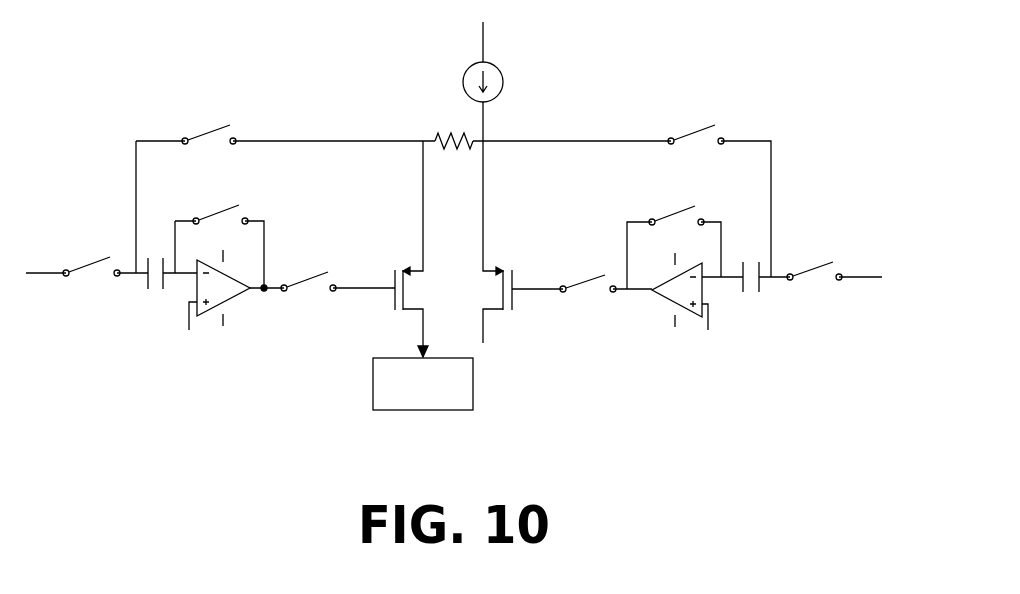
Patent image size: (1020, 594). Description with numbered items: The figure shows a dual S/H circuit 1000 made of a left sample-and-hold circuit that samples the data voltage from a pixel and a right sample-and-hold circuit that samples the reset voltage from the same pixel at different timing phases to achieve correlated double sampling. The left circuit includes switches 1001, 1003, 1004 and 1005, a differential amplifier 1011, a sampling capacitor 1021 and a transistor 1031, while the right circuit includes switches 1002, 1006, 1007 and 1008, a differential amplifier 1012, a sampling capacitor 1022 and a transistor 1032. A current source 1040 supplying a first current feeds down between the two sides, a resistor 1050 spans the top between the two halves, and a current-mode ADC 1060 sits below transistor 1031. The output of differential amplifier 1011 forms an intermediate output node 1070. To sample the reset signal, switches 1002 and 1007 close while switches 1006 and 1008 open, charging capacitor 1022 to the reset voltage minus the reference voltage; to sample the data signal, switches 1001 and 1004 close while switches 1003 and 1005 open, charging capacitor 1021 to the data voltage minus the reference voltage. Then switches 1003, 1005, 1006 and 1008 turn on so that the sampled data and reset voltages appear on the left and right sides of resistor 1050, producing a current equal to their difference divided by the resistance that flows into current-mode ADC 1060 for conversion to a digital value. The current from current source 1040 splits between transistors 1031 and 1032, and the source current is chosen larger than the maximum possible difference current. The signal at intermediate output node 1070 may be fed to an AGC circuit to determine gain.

The dual S/H circuit 1000 is at (461, 265).
The switch 1001 is at (103, 262).
The switch 1002 is at (805, 262).
The switch 1003 is at (228, 126).
The switch 1004 is at (239, 206).
The switch 1005 is at (320, 270).
The switch 1006 is at (680, 126).
The switch 1007 is at (662, 208).
The switch 1008 is at (590, 272).
The differential amplifier 1011 is at (230, 302).
The differential amplifier 1012 is at (668, 302).
The sampling capacitor 1021 is at (153, 292).
The sampling capacitor 1022 is at (747, 294).
The transistor 1031 is at (392, 302).
The transistor 1032 is at (516, 300).
The current source 1040 is at (497, 62).
The resistor 1050 is at (436, 135).
The current-mode ADC 1060 is at (373, 400).
The intermediate output node 1070 is at (264, 288).